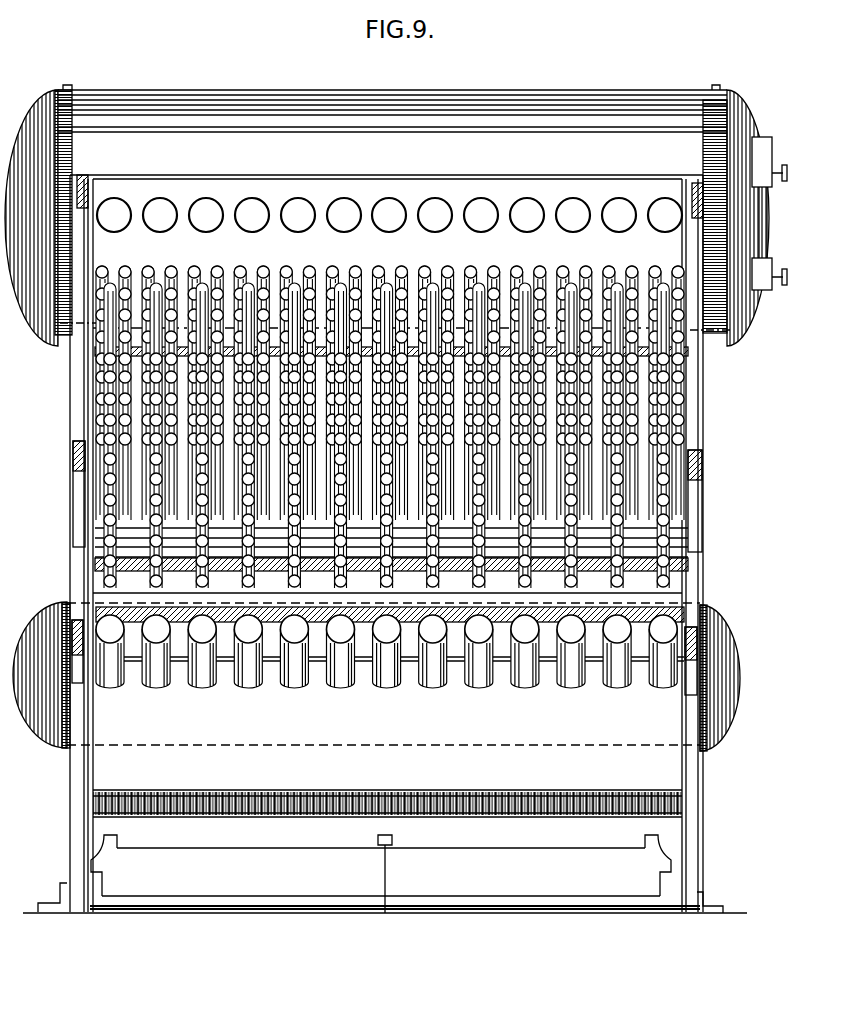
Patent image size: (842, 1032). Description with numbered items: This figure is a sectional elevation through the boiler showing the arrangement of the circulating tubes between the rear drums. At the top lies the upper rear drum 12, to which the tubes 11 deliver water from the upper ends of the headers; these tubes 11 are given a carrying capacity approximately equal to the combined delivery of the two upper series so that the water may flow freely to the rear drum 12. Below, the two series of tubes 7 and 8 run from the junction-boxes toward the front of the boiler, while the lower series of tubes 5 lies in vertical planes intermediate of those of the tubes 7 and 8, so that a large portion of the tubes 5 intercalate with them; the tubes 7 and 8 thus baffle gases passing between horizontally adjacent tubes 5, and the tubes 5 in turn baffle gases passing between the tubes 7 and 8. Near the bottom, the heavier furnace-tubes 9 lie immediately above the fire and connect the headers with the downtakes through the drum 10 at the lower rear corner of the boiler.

The tubes 5 is at (208, 282).
The tubes 7 is at (128, 271).
The tubes 8 is at (103, 270).
The furnace-tubes 9 is at (200, 683).
The drum 10 is at (722, 630).
The tubes 11 is at (348, 271).
The upper rear drum 12 is at (396, 215).